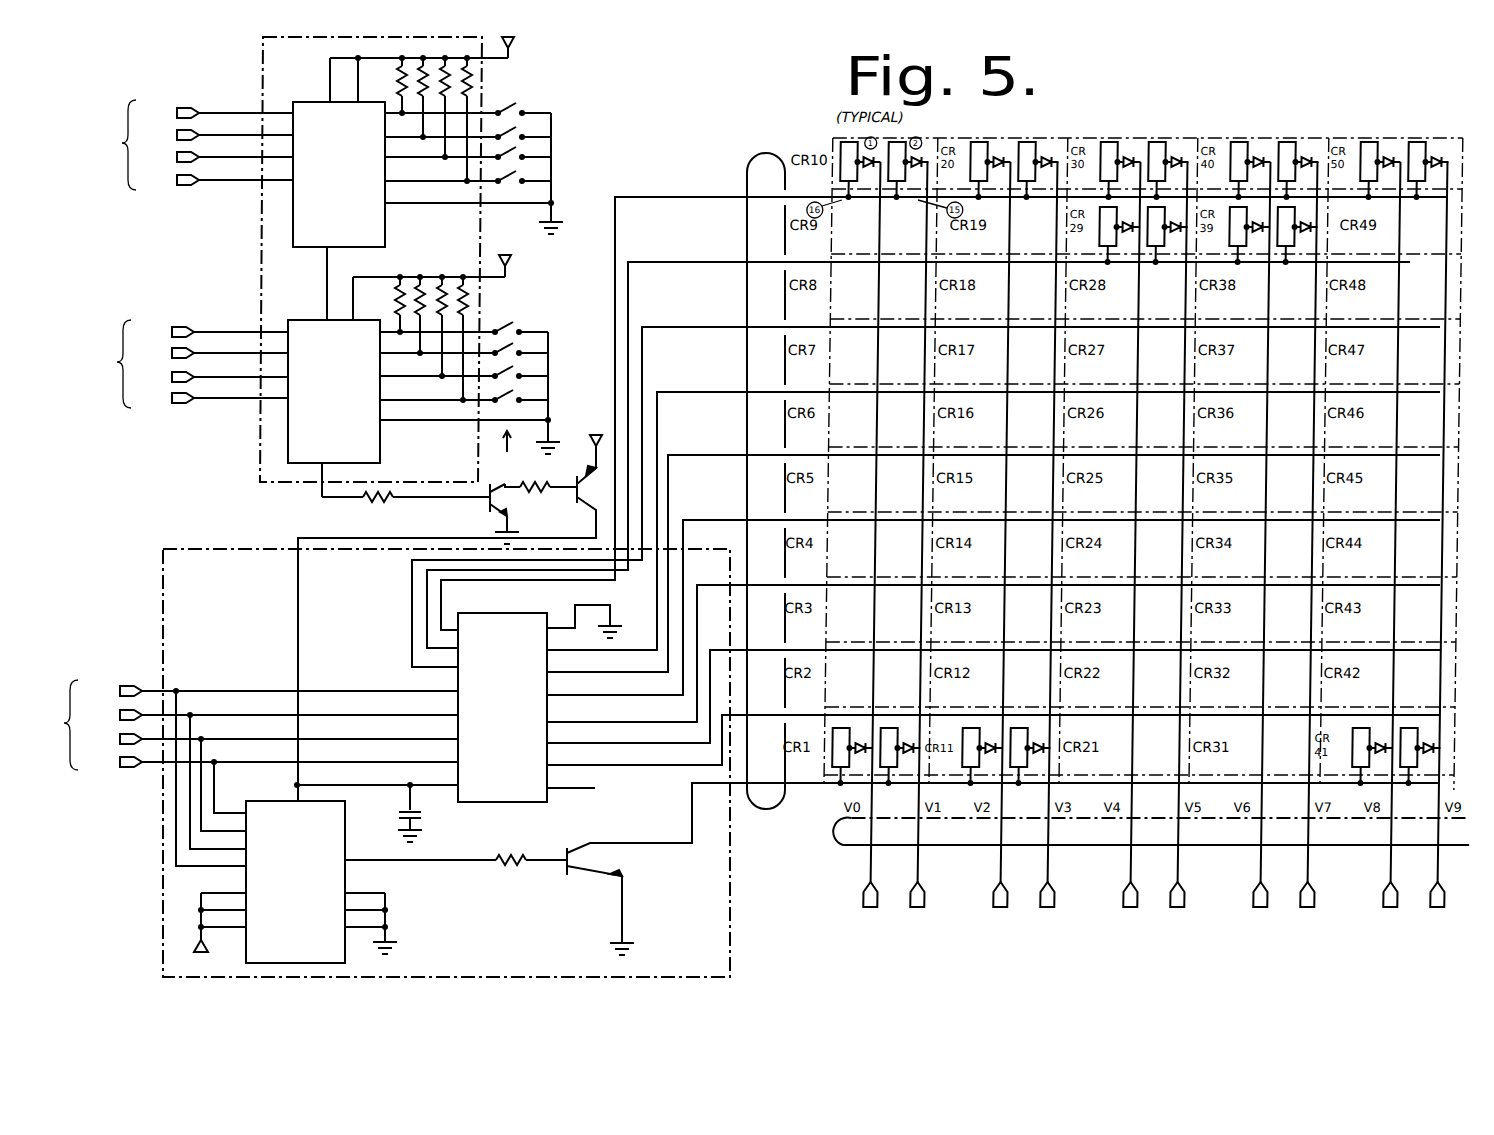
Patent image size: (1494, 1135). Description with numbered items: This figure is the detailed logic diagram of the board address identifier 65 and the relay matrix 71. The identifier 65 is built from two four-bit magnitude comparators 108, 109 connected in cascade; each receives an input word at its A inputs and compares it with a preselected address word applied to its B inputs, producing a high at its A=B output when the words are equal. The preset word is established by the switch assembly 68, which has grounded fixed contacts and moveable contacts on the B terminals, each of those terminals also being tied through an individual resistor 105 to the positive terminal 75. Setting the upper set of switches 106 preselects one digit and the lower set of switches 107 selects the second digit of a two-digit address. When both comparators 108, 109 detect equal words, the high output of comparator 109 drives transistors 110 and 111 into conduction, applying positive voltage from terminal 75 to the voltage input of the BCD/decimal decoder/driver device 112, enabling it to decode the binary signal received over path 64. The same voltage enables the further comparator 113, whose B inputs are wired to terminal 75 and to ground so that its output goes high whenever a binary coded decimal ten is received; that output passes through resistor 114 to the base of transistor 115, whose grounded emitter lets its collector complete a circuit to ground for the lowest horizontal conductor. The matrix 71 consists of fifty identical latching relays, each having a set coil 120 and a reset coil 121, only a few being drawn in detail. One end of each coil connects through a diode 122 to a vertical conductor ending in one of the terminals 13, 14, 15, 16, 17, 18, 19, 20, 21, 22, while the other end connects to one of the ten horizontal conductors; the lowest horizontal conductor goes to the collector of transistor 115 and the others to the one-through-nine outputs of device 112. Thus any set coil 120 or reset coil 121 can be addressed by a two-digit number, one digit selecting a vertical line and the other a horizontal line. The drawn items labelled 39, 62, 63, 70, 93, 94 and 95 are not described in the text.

The terminal 13 is at (857, 894).
The terminal 14 is at (928, 894).
The terminal 15 is at (987, 894).
The terminal 16 is at (1058, 894).
The terminal 17 is at (1117, 894).
The terminal 18 is at (1188, 894).
The terminal 19 is at (1247, 894).
The terminal 20 is at (1318, 894).
The terminal 21 is at (1377, 894).
The terminal 22 is at (1448, 894).
The conductor bundle 39 is at (852, 842).
The first data input lines 62 is at (190, 144).
The second data input lines 63 is at (185, 363).
The path 64 is at (78, 670).
The board address identifier 65 is at (263, 78).
The switch assembly 68 is at (503, 451).
The horizontal line bundle 70 is at (760, 170).
The matrix 71 is at (1228, 135).
The positive terminal 75 is at (520, 44).
The resistor 93 is at (380, 505).
The transistor 94 is at (565, 478).
The capacitor 95 is at (422, 814).
The resistor 105 is at (405, 68).
The upper set of switches 106 is at (563, 108).
The lower set of switches 107 is at (560, 326).
The comparator 108 is at (306, 250).
The comparator 109 is at (378, 462).
The transistor 110 is at (505, 512).
The transistor 111 is at (560, 494).
The BCD/decimal decoder/driver device 112 is at (502, 804).
The magnitude comparator 113 is at (345, 832).
The resistor 114 is at (520, 870).
The transistor 115 is at (578, 859).
The set coil 120 is at (838, 148).
The reset coil 121 is at (897, 200).
The diode 122 is at (912, 165).